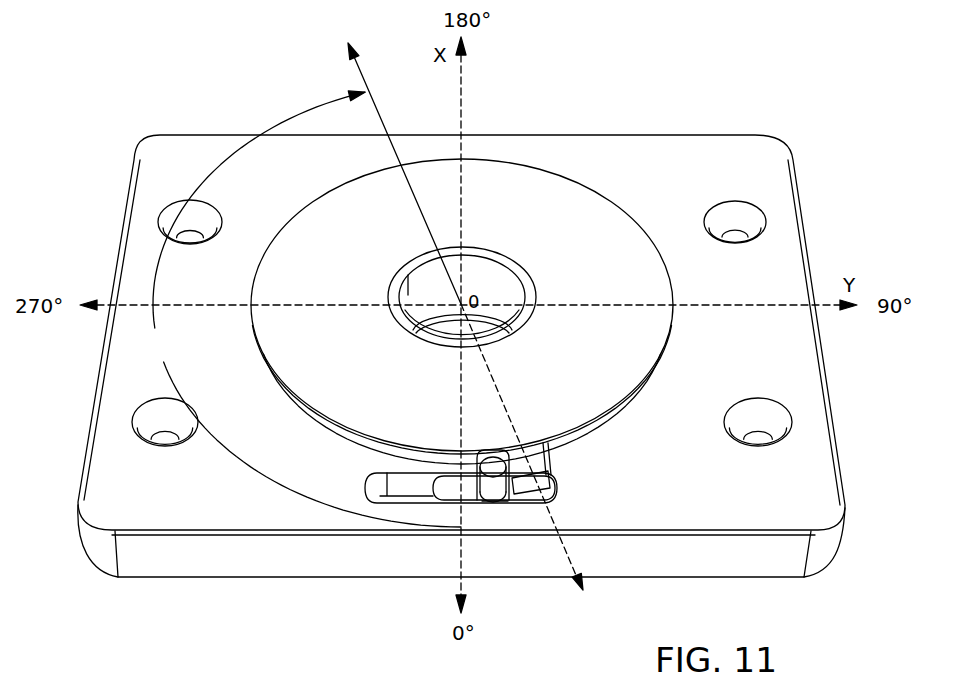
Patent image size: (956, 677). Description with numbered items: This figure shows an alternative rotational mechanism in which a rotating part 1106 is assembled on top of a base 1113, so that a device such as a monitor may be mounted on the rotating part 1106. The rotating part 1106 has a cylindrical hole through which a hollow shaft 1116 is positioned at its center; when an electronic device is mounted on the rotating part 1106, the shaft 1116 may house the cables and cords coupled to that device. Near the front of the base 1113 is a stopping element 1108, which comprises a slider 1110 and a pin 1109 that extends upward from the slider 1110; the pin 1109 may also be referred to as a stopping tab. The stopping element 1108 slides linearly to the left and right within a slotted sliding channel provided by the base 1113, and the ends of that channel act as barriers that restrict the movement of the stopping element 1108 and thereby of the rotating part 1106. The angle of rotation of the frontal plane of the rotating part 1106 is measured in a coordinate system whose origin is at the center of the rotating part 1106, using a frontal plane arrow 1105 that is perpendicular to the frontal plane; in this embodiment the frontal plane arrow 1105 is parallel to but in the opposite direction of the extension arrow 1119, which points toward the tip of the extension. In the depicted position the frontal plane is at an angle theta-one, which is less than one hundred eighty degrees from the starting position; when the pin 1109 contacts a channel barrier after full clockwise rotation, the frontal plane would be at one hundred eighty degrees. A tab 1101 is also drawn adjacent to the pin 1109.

The stop tab 1101 is at (550, 478).
The frontal plane arrow 1105 is at (305, 273).
The rotating part 1106 is at (507, 178).
The stopping element 1108 is at (496, 528).
The pin 1109 is at (487, 460).
The slider 1110 is at (447, 490).
The base 1113 is at (687, 157).
The hollow shaft 1116 is at (408, 272).
The extension arrow 1119 is at (540, 463).